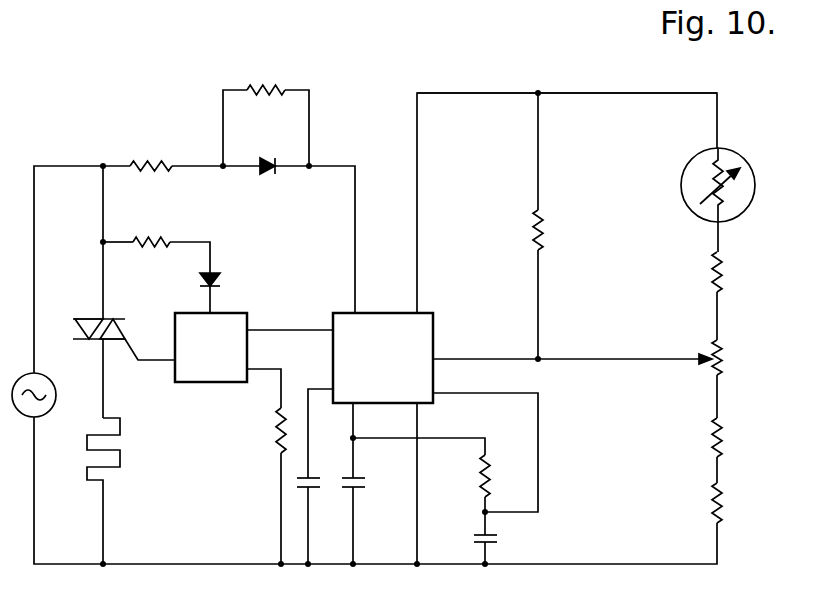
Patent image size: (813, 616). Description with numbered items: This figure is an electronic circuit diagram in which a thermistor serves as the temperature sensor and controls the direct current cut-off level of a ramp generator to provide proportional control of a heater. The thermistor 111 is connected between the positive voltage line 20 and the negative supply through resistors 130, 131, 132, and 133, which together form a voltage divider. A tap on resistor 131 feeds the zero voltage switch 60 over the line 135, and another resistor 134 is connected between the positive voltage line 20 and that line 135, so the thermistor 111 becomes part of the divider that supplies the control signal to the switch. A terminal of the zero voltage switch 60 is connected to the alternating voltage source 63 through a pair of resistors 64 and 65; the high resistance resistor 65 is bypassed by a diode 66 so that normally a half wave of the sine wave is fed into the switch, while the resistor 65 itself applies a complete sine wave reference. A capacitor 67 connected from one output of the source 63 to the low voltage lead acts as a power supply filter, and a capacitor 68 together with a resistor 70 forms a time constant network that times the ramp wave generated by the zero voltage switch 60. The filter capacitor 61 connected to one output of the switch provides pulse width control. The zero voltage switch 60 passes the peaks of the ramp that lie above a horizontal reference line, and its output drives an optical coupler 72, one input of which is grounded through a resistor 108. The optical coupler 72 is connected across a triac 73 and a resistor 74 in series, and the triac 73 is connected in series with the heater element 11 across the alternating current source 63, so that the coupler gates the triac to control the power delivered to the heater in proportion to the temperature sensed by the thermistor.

The heater element 11 is at (119, 450).
The positive voltage line 20 is at (588, 92).
The zero voltage switch 60 is at (433, 313).
The filter capacitor 61 is at (314, 478).
The alternating voltage source 63 is at (49, 418).
The resistor 64 is at (150, 162).
The high resistance resistor 65 is at (282, 87).
The diode 66 is at (265, 176).
The capacitor 67 is at (362, 485).
The capacitor 68 is at (478, 533).
The resistor 70 is at (495, 478).
The optical coupler 72 is at (247, 313).
The triac 73 is at (118, 320).
The resistor 74 is at (165, 240).
The resistor 108 is at (272, 437).
The thermistor 111 is at (748, 165).
The resistor 130 is at (728, 272).
The resistor 131 is at (725, 368).
The resistor 132 is at (721, 447).
The resistor 133 is at (722, 514).
The resistor 134 is at (547, 238).
The line 135 is at (626, 358).